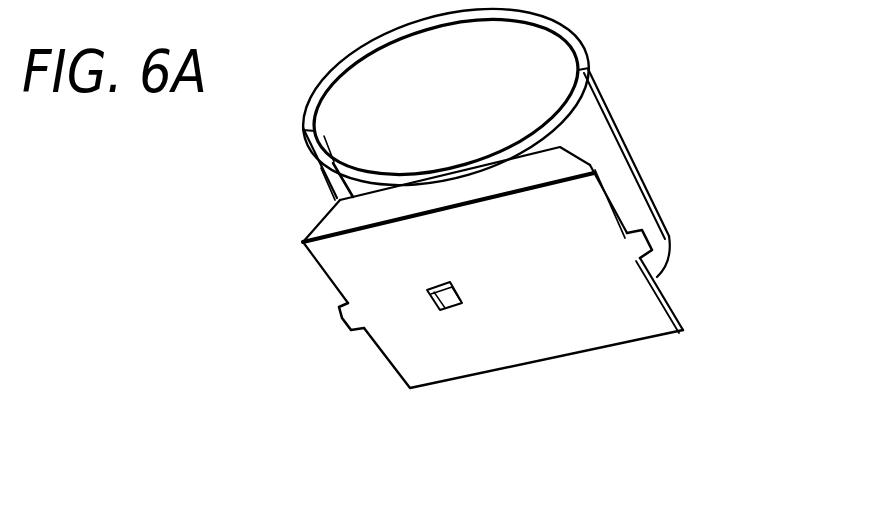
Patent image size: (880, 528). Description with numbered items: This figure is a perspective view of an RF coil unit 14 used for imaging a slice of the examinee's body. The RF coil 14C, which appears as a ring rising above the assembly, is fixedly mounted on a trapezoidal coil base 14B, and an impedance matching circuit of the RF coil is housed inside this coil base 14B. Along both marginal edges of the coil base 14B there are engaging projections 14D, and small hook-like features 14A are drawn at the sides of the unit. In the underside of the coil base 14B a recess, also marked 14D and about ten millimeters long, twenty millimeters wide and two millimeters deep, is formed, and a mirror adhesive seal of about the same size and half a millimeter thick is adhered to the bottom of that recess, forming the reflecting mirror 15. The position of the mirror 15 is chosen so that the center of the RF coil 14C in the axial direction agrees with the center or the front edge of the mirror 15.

The RF coil unit 14 is at (607, 25).
The hook 14A is at (647, 237).
The coil base 14B is at (322, 218).
The RF coil 14C is at (330, 70).
The engaging projections 14D is at (450, 307).
The reflecting mirror 15 is at (428, 293).